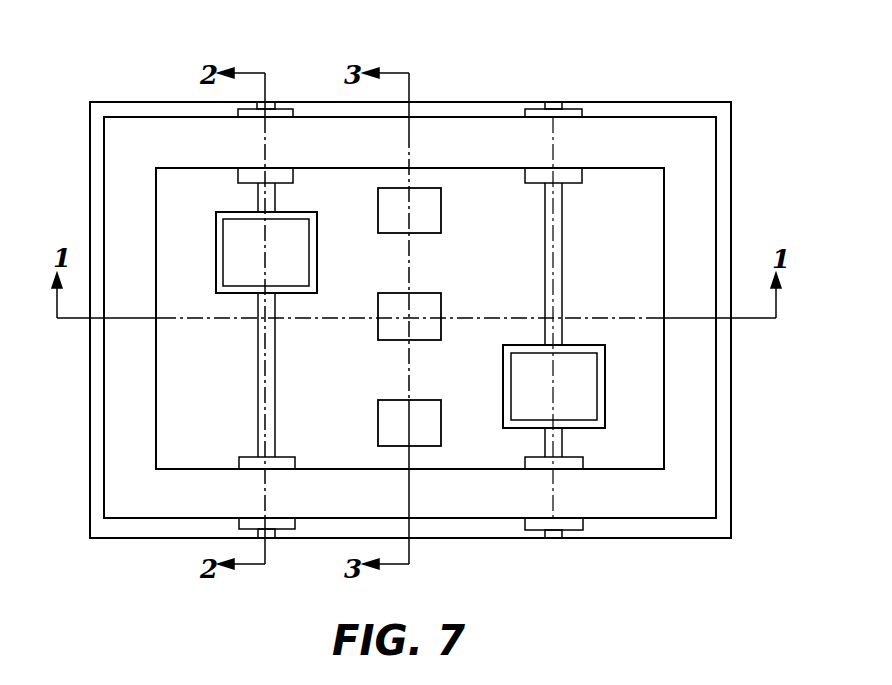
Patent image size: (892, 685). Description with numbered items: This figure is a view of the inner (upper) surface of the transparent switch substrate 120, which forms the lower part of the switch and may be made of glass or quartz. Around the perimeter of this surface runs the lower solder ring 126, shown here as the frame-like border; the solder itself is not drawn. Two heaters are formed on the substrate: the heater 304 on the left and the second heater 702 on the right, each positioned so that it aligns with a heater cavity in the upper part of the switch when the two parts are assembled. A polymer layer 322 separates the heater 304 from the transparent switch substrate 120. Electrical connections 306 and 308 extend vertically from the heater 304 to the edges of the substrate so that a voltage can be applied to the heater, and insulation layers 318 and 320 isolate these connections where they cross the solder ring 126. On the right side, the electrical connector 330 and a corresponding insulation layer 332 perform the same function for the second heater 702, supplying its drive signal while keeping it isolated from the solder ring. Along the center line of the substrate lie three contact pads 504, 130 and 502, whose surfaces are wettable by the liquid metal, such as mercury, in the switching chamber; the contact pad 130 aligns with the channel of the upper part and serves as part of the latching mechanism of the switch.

The transparent switch substrate 120 is at (732, 212).
The lower solder ring 126 is at (702, 410).
The wettable contact pad 130 is at (432, 309).
The heater 304 is at (288, 293).
The electrical connection 306 is at (258, 348).
The electrical connection 308 is at (258, 200).
The insulation layer 318 is at (250, 460).
The insulation layer 320 is at (288, 102).
The polymer layer 322 is at (317, 277).
The electrical connector 330 is at (562, 252).
The second lower bearing 332 is at (563, 447).
The contact pad 502 is at (432, 412).
The contact pad 504 is at (432, 208).
The heater 702 is at (590, 353).